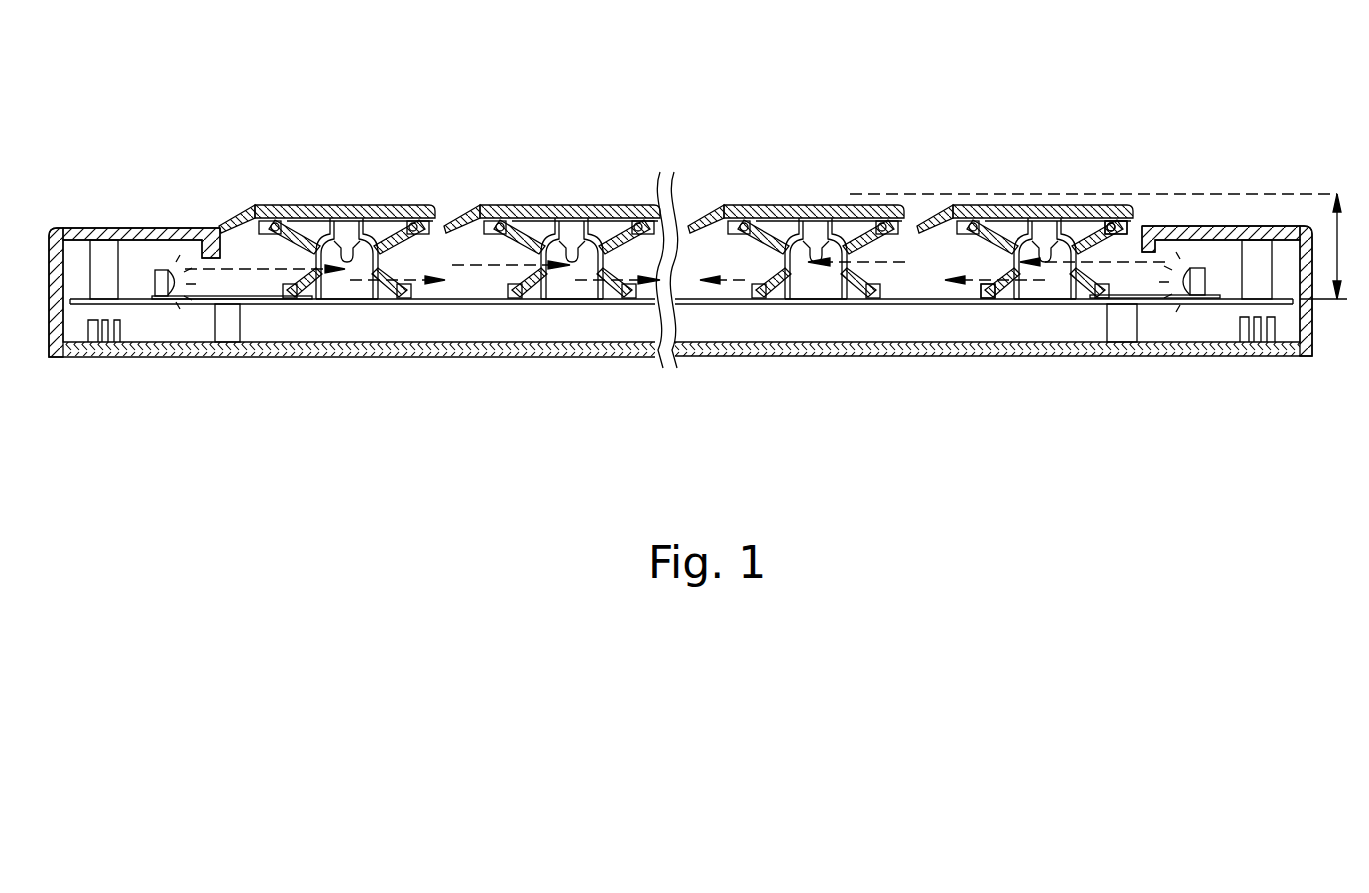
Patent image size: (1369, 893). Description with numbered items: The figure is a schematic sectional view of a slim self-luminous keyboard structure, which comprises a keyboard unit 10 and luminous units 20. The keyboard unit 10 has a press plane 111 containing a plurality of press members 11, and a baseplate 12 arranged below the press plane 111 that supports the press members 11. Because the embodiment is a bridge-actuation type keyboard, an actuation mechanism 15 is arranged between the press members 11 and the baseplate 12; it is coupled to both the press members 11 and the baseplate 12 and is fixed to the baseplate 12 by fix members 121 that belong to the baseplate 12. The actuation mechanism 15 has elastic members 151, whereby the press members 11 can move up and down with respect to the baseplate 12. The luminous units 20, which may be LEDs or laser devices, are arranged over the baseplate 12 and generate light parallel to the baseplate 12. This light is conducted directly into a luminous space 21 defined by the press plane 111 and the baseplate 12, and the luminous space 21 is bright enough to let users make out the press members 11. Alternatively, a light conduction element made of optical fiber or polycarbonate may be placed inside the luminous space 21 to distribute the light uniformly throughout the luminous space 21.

The keyboard unit 10 is at (796, 176).
The press member 11 is at (753, 205).
The baseplate 12 is at (812, 300).
The actuation mechanism 15 is at (980, 220).
The elastic member 151 is at (1063, 219).
The press plane 111 is at (1232, 194).
The fix member 121 is at (1003, 296).
The luminous unit 20 is at (1215, 297).
The luminous space 21 is at (1356, 245).